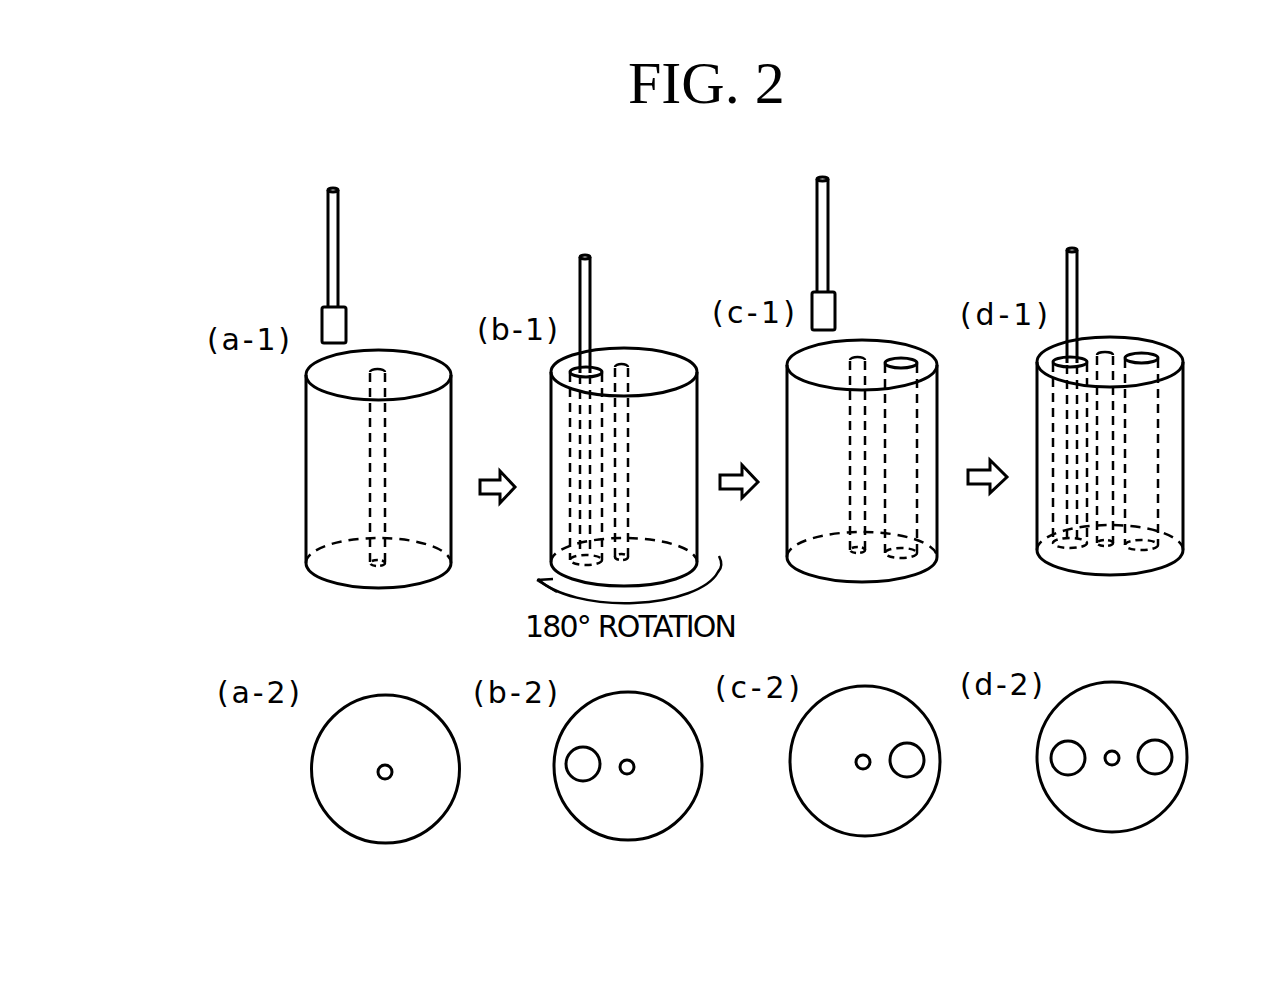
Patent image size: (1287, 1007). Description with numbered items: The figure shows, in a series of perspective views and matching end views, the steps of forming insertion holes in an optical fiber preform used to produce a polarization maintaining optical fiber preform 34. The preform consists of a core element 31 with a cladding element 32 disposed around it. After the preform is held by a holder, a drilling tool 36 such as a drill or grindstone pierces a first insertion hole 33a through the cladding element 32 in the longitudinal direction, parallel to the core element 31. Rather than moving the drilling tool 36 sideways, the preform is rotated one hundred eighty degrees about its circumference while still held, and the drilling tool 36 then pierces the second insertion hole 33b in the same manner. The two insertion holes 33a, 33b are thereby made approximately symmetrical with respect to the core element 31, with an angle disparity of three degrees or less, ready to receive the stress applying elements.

The core element 31 is at (376, 370).
The cladding element 32 is at (322, 368).
The insertion hole 33a is at (905, 350).
The insertion hole 33b is at (1050, 345).
The polarization maintaining optical fiber preform 34 is at (306, 480).
The drilling tool 36 is at (337, 237).